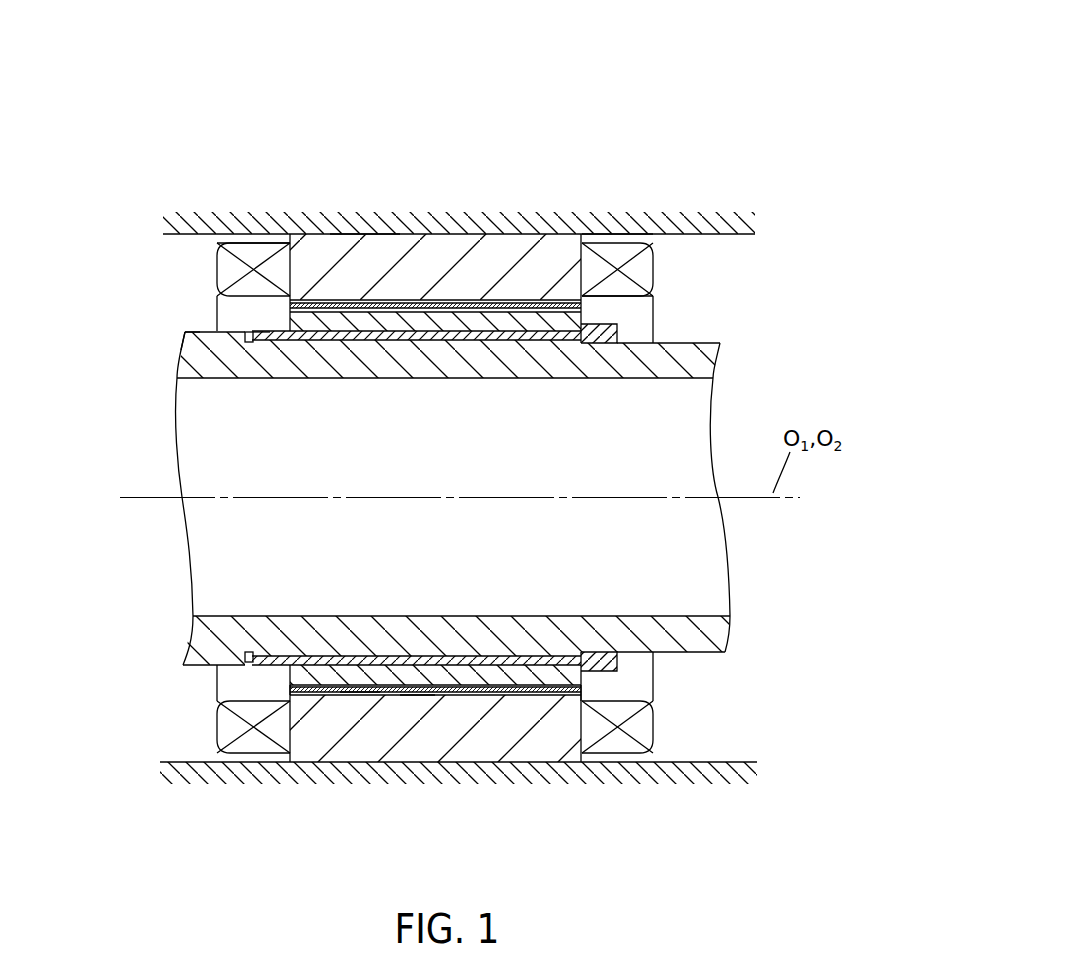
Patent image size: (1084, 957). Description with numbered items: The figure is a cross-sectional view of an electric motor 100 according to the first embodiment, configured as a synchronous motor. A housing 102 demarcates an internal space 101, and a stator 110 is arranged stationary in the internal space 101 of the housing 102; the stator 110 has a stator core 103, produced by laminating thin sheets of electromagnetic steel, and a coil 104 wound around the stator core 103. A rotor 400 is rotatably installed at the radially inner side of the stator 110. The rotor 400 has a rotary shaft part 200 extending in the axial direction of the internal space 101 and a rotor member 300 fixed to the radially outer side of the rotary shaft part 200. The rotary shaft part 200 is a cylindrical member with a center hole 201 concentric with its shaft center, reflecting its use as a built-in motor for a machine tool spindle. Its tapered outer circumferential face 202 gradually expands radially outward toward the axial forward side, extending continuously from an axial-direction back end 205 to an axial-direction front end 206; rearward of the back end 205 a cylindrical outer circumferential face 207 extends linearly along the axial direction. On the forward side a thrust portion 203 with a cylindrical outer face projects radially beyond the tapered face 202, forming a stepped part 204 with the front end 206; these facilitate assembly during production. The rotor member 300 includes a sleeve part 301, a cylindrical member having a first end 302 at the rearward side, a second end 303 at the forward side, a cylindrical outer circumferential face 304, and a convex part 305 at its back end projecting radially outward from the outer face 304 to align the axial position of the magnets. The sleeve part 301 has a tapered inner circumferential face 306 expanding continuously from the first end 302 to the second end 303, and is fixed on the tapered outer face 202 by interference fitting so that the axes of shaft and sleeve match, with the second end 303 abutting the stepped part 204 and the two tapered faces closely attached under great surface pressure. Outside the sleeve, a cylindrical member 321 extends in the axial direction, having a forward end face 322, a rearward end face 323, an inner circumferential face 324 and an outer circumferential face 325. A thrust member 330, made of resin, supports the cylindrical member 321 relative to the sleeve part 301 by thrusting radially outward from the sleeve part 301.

The electric motor 100 is at (677, 86).
The internal space 101 is at (711, 271).
The housing 102 is at (699, 228).
The stator core 103 is at (440, 252).
The coil 104 is at (253, 255).
The stator 110 is at (360, 221).
The rotary shaft part 200 is at (188, 317).
The center hole 201 is at (566, 378).
The tapered outer circumferential face 202 is at (538, 333).
The thrust portion 203 is at (218, 326).
The stepped part 204 is at (255, 330).
The axial-direction back end 205 is at (653, 343).
The axial-direction front end 206 is at (250, 333).
The outer circumferential face 207 is at (689, 652).
The rotor member 300 is at (278, 318).
The sleeve part 301 is at (634, 327).
The first end 302 is at (617, 658).
The second end 303 is at (218, 668).
The outer circumferential face 304 is at (510, 684).
The convex part 305 is at (607, 325).
The tapered inner circumferential face 306 is at (377, 341).
The cylindrical member 321 is at (549, 287).
The end face 322 is at (290, 689).
The end face 323 is at (583, 687).
The inner circumferential face 324 is at (542, 686).
The outer circumferential face 325 is at (363, 690).
The thrust member 330 is at (415, 704).
The rotor 400 is at (90, 250).